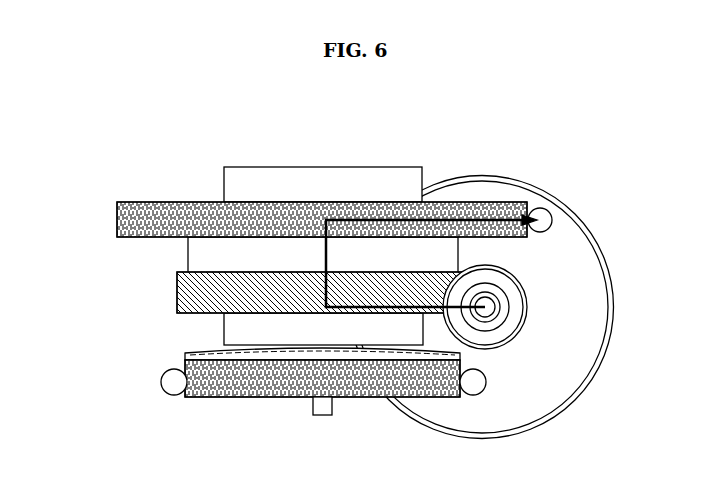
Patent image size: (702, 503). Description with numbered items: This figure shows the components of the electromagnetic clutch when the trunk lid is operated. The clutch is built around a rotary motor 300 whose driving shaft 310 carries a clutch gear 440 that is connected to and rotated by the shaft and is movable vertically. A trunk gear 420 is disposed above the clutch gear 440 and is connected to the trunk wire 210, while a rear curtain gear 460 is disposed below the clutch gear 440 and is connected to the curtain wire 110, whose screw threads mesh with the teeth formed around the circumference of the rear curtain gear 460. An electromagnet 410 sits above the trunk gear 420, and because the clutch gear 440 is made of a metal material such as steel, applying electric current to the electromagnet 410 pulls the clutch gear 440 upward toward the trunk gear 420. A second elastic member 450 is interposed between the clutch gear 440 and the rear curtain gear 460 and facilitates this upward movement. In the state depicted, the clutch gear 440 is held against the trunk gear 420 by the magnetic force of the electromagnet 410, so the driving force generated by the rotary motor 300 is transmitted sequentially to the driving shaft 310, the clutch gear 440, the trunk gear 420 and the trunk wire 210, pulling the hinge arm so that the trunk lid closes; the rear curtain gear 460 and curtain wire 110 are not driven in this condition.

The curtain wire 110 is at (474, 382).
The trunk wire 210 is at (548, 213).
The rotary motor 300 is at (563, 365).
The driving shaft 310 is at (492, 306).
The electromagnet 410 is at (272, 167).
The trunk gear 420 is at (155, 216).
The clutch gear 440 is at (202, 293).
The second elastic member 450 is at (218, 356).
The rear curtain gear 460 is at (216, 383).